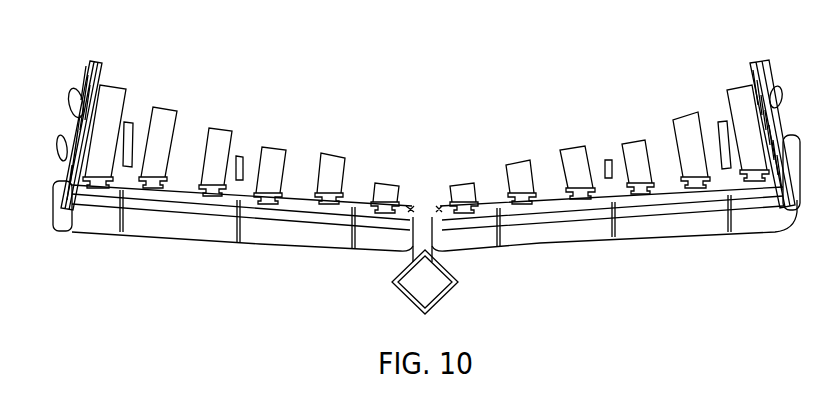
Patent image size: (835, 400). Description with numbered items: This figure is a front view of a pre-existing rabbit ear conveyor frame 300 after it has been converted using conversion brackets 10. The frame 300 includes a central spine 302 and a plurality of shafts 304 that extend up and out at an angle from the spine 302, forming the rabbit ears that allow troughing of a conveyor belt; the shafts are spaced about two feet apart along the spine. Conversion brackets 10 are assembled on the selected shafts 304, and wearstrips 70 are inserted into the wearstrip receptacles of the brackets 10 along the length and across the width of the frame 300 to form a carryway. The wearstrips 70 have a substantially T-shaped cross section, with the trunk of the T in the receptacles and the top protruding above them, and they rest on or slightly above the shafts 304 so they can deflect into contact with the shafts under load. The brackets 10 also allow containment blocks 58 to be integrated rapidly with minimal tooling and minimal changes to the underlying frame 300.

The conversion bracket 10 is at (70, 96).
The containment block 58 is at (95, 63).
The wearstrip 70 is at (221, 132).
The frame 300 is at (431, 122).
The central spine 302 is at (430, 300).
The shaft 304 is at (604, 160).